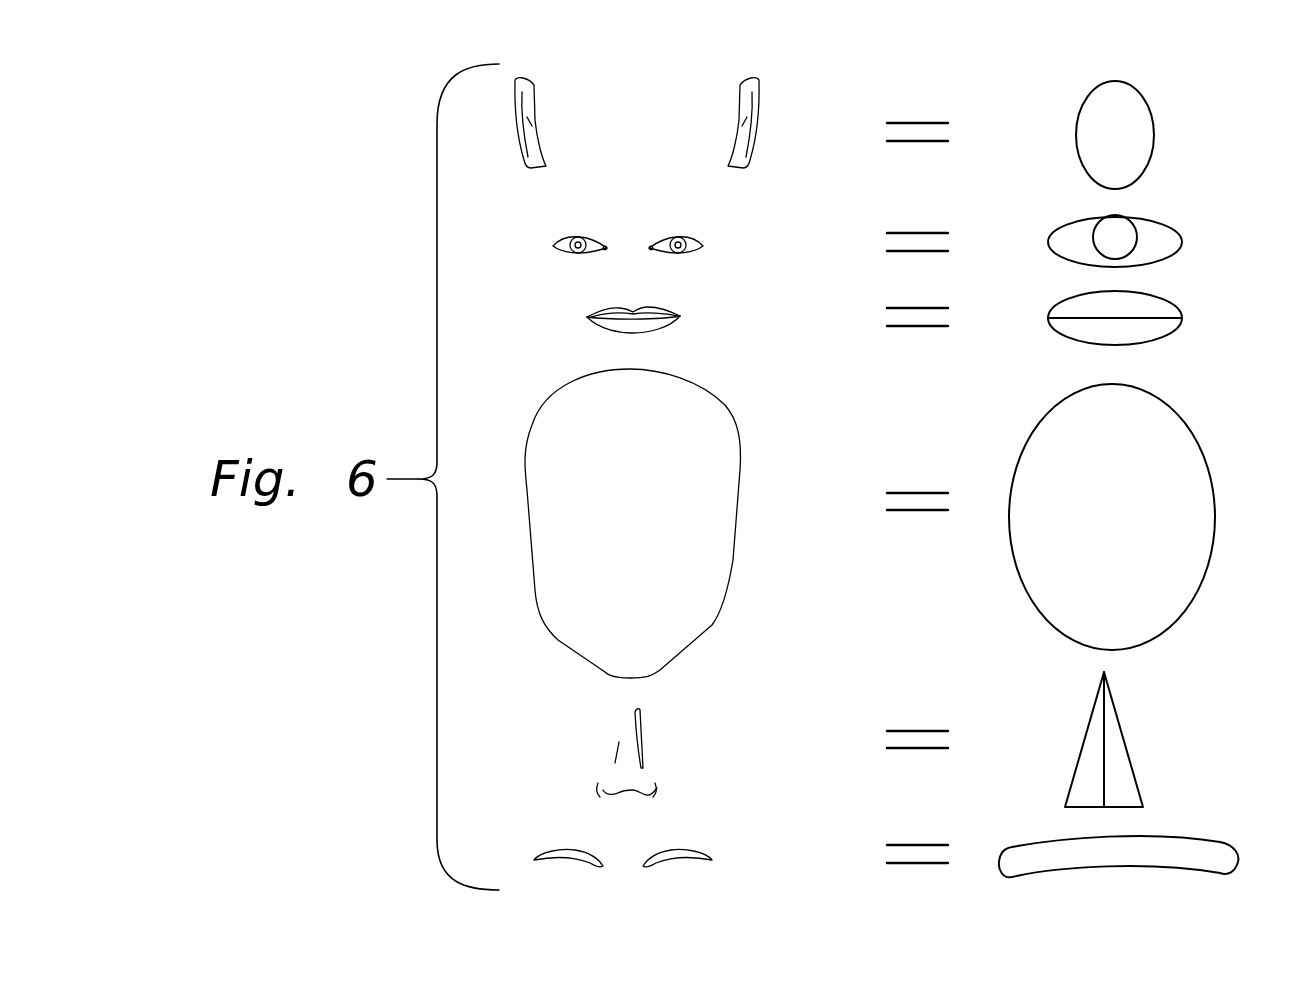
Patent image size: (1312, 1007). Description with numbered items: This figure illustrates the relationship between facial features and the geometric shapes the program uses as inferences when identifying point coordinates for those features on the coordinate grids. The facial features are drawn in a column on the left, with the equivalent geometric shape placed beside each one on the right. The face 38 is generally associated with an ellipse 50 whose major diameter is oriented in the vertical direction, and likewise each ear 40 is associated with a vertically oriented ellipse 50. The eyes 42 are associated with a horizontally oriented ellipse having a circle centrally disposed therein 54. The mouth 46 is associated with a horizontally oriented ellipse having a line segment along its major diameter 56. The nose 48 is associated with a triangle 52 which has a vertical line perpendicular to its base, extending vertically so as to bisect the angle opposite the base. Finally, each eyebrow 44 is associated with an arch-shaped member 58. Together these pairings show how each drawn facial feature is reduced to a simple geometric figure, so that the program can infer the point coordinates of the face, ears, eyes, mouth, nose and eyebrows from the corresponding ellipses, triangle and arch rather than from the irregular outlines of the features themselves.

The face 38 is at (738, 432).
The ear 40 is at (534, 85).
The eyes 42 is at (590, 238).
The eyebrow 44 is at (603, 866).
The mouth 46 is at (660, 309).
The nose 48 is at (676, 756).
The ellipse 50 is at (1153, 152).
The triangle 52 is at (1125, 730).
The horizontally oriented ellipse having a circle centrally disposed therein 54 is at (1170, 222).
The horizontally oriented ellipse having a line segment along its major diameter 56 is at (1175, 305).
The arch-shaped member 58 is at (1190, 842).